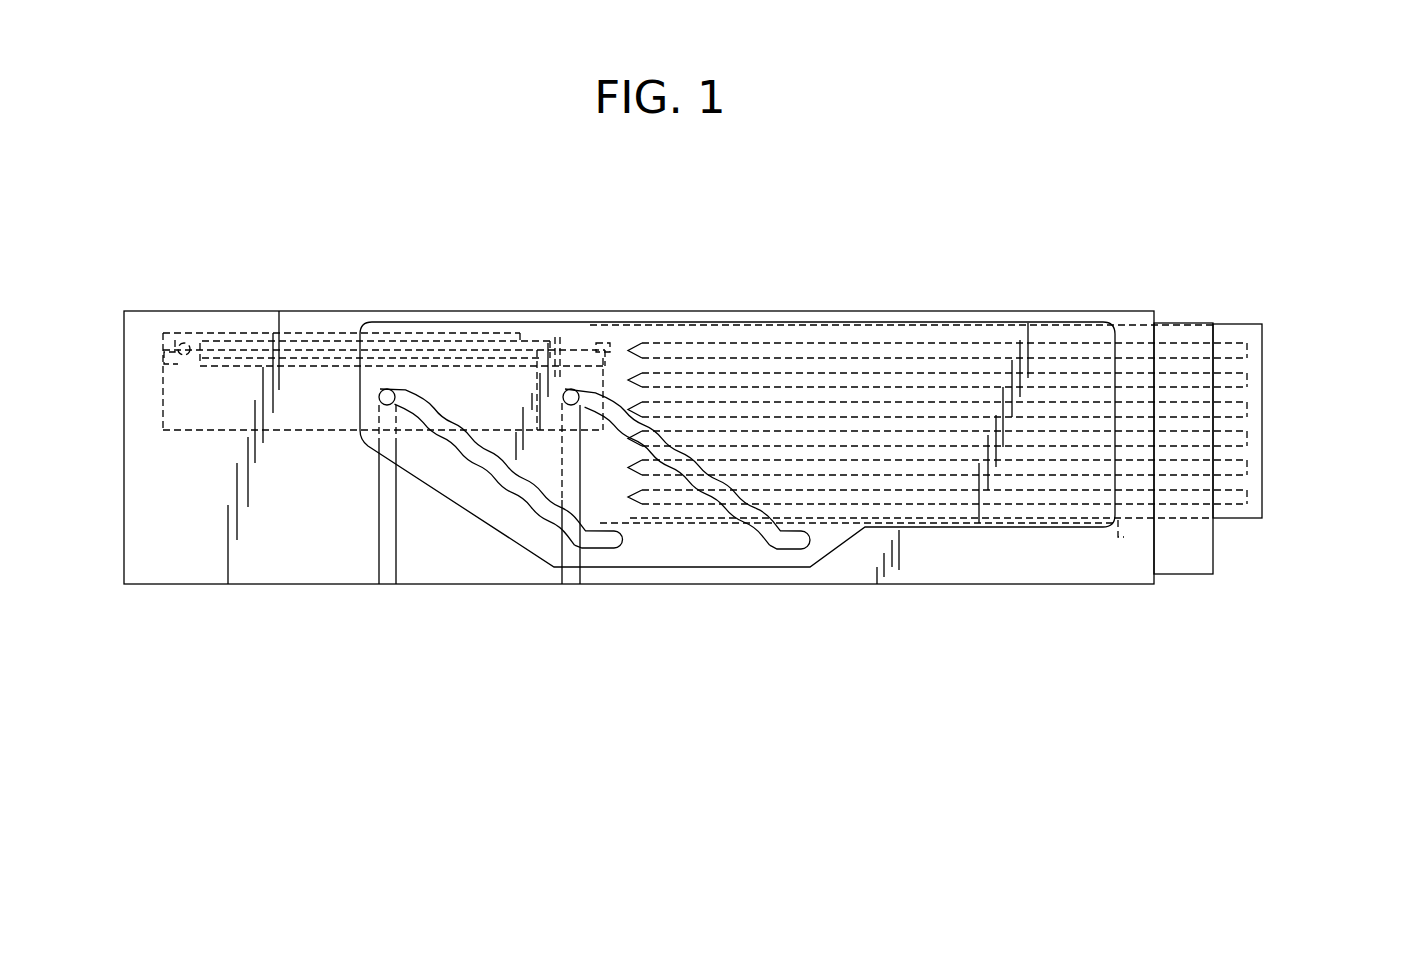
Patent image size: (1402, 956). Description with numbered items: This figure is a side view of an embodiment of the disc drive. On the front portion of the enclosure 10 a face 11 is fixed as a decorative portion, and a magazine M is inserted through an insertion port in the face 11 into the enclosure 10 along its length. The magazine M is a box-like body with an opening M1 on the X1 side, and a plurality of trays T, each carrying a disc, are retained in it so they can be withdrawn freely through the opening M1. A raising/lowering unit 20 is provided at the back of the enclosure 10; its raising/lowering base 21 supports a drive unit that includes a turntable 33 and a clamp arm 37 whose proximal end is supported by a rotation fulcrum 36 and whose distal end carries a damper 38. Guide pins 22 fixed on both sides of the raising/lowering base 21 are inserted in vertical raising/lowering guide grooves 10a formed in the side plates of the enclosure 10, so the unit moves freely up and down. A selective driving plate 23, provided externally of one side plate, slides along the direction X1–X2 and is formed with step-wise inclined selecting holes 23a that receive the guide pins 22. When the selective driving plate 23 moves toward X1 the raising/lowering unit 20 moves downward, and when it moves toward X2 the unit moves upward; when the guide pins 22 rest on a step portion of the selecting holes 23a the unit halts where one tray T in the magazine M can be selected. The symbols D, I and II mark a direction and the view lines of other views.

The enclosure 10 is at (303, 600).
The face 11 is at (1192, 555).
The magazine M is at (1280, 466).
The selective driving plate 23 is at (712, 548).
The guide pins 22 is at (387, 389).
The selecting holes 23a is at (510, 480).
The raising/lowering guide grooves 10a is at (388, 572).
The opening M1 is at (575, 460).
The raising/lowering base 21 is at (178, 385).
The raising/lowering unit 20 is at (205, 434).
The clamp arm 37 is at (322, 330).
The turntable 33 is at (453, 343).
The damper 38 is at (538, 343).
The direction D is at (623, 345).
The rotation fulcrum 36 is at (190, 345).
The trays T is at (1250, 352).
The view direction I is at (942, 298).
The view direction II is at (245, 298).
The direction X1 is at (874, 229).
The direction X2 is at (890, 230).